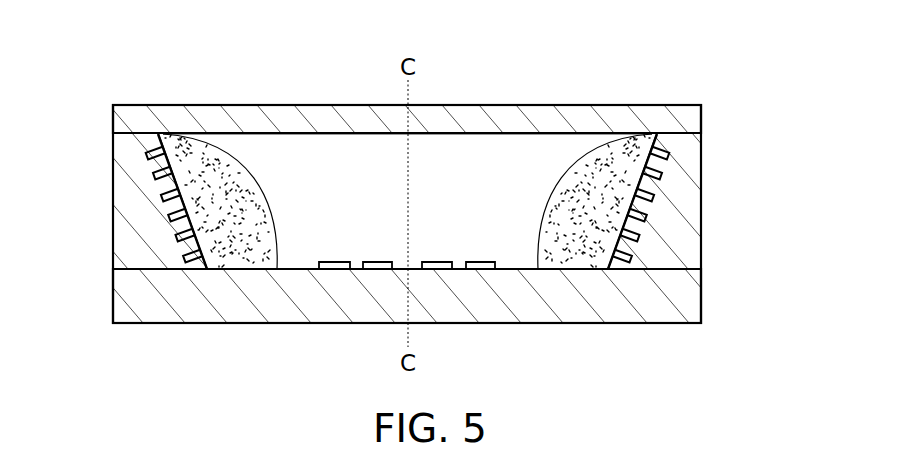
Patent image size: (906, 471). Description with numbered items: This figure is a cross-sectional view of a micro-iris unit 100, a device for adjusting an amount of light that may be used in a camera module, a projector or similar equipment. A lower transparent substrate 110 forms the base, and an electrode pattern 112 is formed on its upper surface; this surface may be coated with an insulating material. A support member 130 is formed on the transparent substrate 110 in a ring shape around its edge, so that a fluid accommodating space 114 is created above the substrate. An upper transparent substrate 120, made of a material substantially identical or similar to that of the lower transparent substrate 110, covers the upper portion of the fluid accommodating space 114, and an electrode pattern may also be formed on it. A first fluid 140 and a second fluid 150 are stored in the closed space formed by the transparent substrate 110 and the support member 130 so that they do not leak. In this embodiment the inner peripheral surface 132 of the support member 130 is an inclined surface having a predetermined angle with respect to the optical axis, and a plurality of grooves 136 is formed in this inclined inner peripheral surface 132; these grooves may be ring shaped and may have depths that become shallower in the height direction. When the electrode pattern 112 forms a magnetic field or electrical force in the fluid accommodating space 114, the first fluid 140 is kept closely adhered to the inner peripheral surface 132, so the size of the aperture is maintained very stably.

The micro-iris unit 100 is at (556, 82).
The transparent substrate 110 is at (690, 293).
The electrode pattern 112 is at (438, 270).
The fluid accommodating space 114 is at (455, 190).
The transparent substrate 120 is at (690, 117).
The support member 130 is at (690, 194).
The inner peripheral surface 132 is at (152, 184).
The grooves 136 is at (184, 217).
The first fluid 140 is at (230, 150).
The second fluid 150 is at (325, 150).